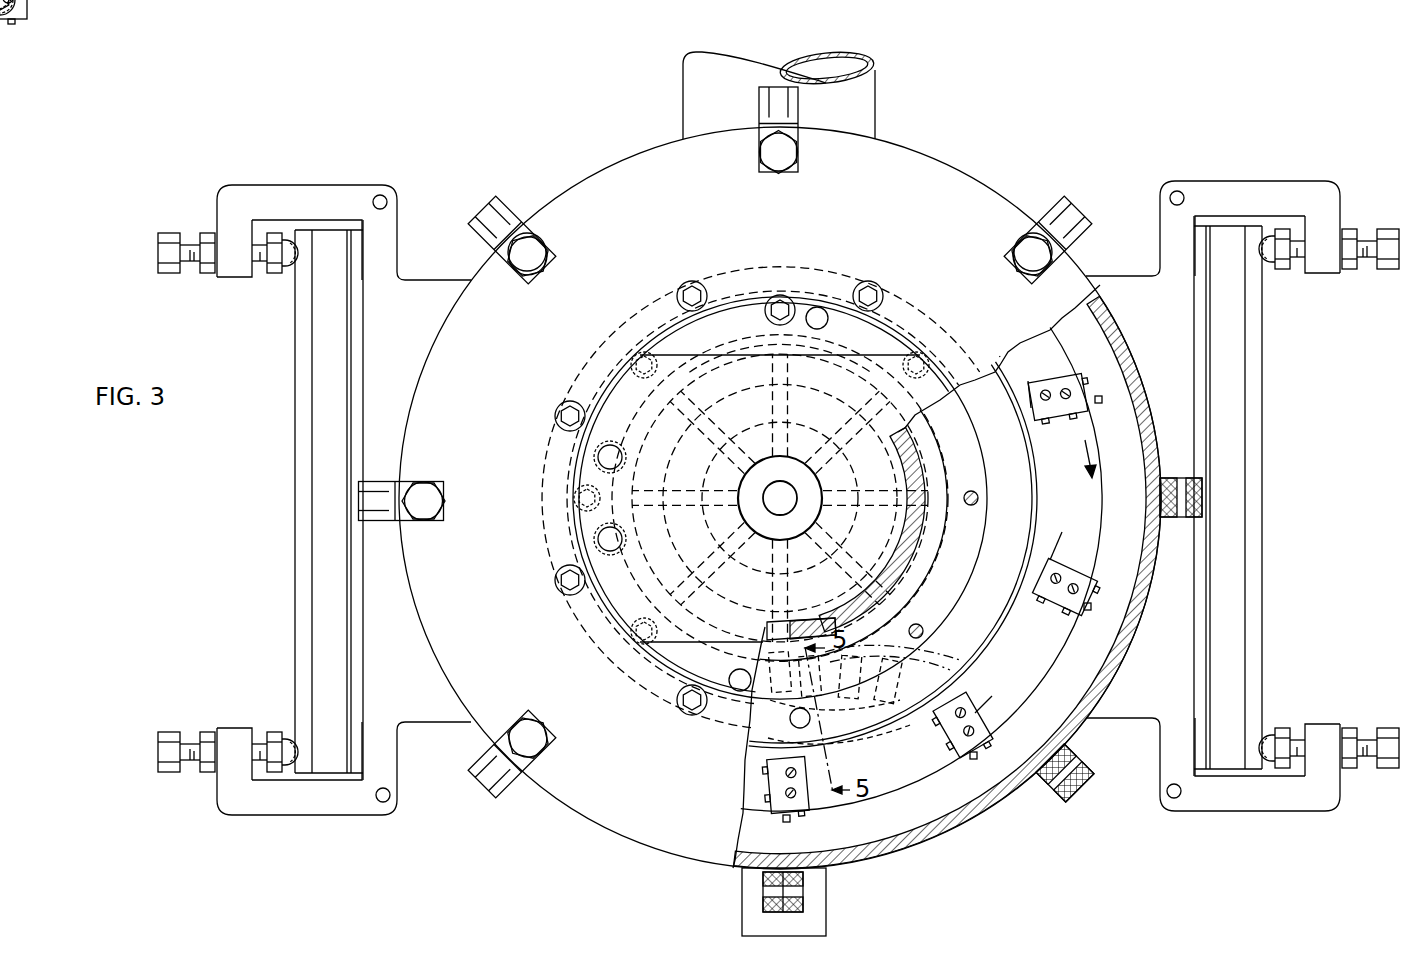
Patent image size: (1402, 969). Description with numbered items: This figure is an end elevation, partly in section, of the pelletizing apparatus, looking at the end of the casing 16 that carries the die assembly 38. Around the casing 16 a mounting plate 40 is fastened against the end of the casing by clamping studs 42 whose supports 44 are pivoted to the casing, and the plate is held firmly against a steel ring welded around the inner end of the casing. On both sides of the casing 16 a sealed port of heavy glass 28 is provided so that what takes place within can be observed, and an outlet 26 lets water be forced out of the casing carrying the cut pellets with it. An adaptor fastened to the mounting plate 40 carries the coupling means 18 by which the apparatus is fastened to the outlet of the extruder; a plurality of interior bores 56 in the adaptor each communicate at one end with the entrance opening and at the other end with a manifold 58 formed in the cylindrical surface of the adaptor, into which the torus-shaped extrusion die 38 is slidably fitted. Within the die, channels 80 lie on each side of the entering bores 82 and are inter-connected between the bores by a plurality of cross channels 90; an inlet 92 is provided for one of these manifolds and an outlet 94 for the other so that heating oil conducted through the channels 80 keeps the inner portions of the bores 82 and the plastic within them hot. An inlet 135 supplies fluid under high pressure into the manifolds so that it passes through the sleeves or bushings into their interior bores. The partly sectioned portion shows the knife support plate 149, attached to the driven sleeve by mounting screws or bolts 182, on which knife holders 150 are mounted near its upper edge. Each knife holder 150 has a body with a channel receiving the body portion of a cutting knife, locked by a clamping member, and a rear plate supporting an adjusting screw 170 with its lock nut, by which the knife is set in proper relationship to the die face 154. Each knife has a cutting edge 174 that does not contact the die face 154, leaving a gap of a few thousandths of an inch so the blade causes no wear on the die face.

The casing 16 is at (936, 159).
The coupling means 18 is at (602, 392).
The outlet 26 is at (878, 91).
The sealed port of heavy glass 28 is at (305, 606).
The die assembly 38 is at (988, 588).
The mounting plate 40 is at (901, 211).
The clamping studs 42 is at (540, 250).
The supports 44 is at (503, 210).
The interior bores 56 is at (714, 486).
The manifold 58 is at (928, 440).
The channels 80 is at (890, 688).
The entering bores 82 is at (742, 655).
The cross channels 90 is at (906, 660).
The inlet 92 is at (737, 690).
The outlet 94 is at (822, 310).
The inlet 135 is at (792, 722).
The knife support plate 149 is at (1070, 485).
The knife holders 150 is at (1060, 416).
The die face 154 is at (1001, 630).
The adjusting screw 170 is at (1100, 400).
The cutting edge 174 is at (1022, 384).
The mounting screws or bolts 182 is at (1028, 611).